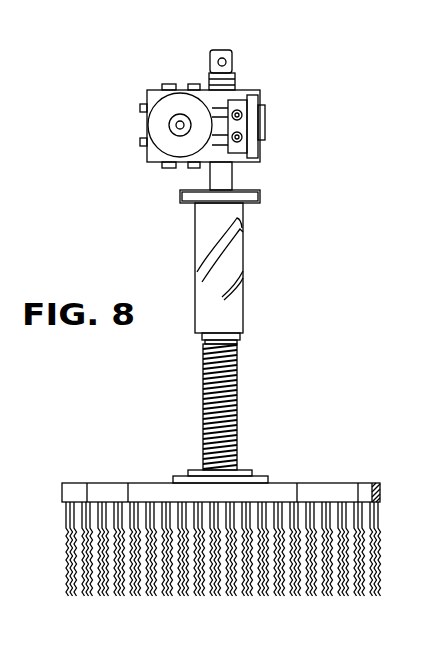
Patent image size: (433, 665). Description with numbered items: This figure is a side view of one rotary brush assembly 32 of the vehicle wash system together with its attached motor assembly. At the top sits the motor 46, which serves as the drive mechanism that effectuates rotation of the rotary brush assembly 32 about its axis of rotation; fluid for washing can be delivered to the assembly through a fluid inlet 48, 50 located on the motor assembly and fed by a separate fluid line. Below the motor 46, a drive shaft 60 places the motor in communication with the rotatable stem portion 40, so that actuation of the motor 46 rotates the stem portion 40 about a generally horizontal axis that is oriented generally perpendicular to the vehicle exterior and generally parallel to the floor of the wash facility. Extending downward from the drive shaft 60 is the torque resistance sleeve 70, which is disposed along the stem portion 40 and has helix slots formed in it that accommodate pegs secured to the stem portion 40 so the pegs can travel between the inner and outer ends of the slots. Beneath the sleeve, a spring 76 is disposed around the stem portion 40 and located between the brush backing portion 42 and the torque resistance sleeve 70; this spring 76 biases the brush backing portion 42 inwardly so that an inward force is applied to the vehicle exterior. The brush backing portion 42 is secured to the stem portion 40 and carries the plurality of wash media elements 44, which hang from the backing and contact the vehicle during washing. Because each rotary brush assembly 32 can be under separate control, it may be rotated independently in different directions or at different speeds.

The rotary brush assembly 32 is at (230, 115).
The stem portion 40 is at (204, 407).
The brush backing portion 42 is at (333, 483).
The wash media elements 44 is at (97, 598).
The motor 46 is at (259, 110).
The fluid inlet 48 is at (264, 55).
The fluid inlet 50 is at (227, 61).
The drive shaft 60 is at (210, 177).
The torque resistance sleeve 70 is at (230, 248).
The spring 76 is at (203, 420).